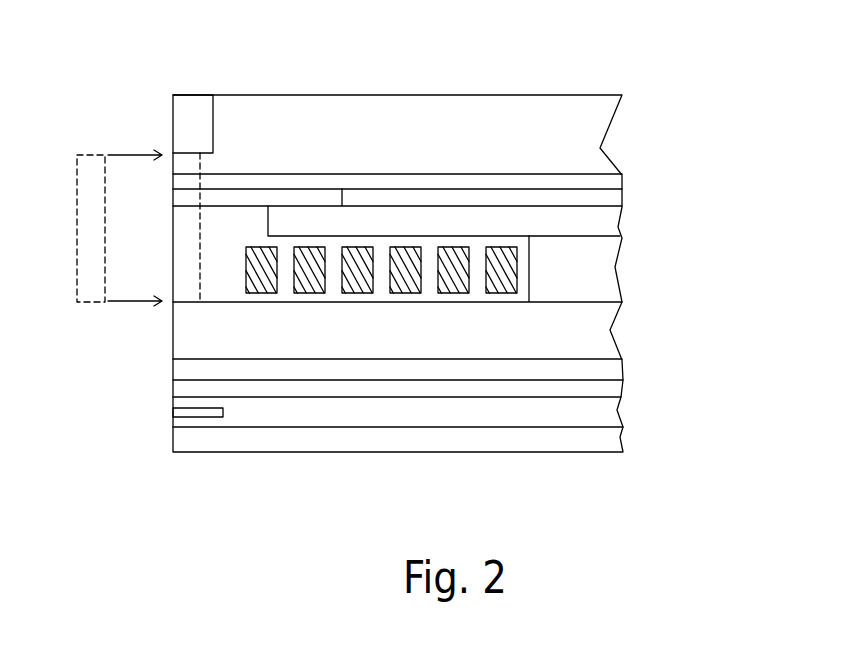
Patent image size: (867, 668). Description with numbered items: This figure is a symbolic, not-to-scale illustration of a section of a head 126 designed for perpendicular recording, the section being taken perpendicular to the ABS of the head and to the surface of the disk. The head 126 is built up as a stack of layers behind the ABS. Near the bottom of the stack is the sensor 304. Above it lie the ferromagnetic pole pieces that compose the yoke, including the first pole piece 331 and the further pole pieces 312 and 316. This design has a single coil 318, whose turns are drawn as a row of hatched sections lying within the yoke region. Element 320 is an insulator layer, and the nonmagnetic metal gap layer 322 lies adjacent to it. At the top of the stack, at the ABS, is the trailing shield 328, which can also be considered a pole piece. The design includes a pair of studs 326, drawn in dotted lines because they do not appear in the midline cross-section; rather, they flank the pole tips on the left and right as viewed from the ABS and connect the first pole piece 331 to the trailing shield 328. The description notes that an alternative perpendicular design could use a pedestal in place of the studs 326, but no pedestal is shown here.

The head 126 is at (494, 76).
The sensor 304 is at (177, 412).
The pole piece 312 is at (612, 220).
The pole piece 316 is at (608, 278).
The coil 318 is at (362, 290).
The insulator layer 320 is at (617, 201).
The nonmagnetic metal gap layer 322 is at (613, 183).
The studs 326 is at (83, 158).
The trailing shield 328 is at (190, 110).
The first pole piece 331 is at (608, 345).
The air bearing surface ABS is at (167, 346).